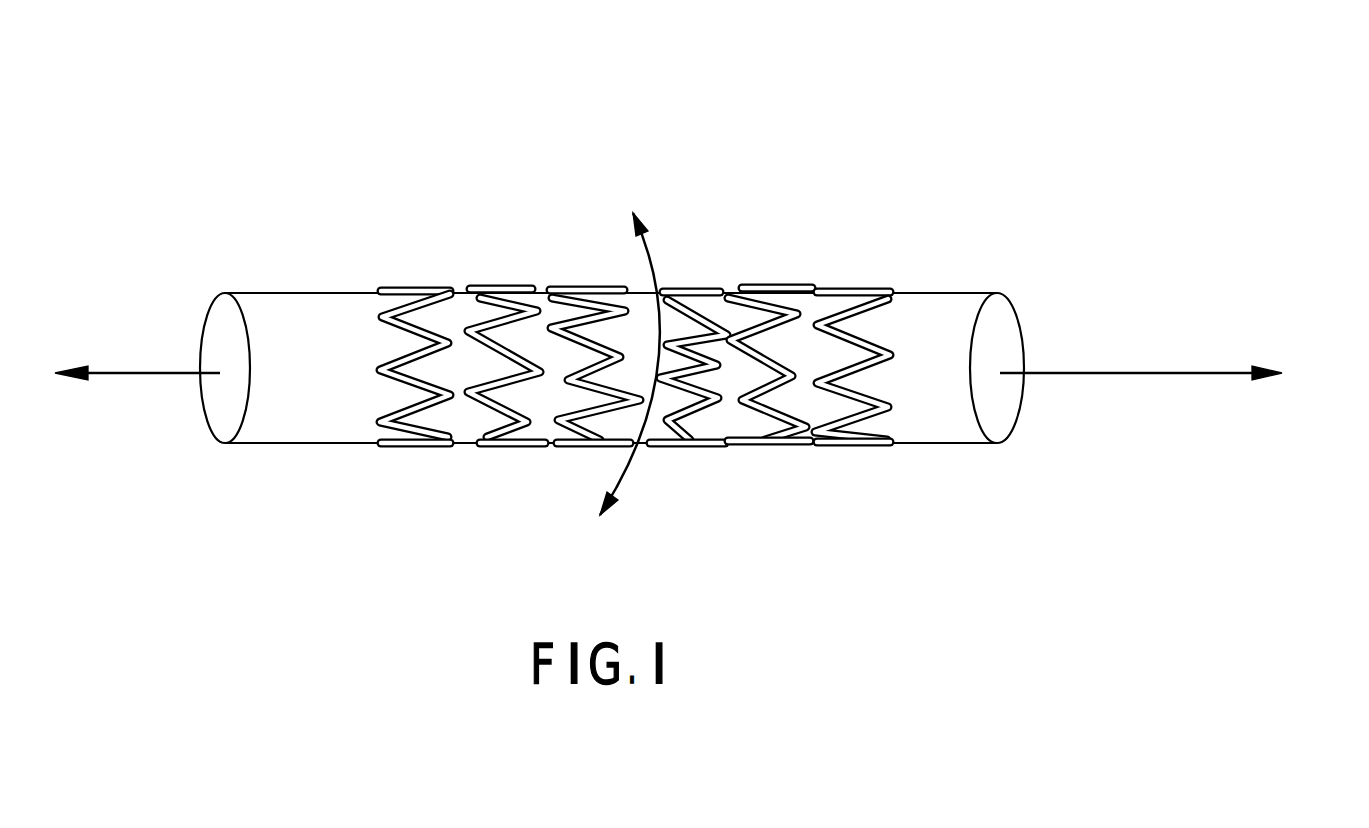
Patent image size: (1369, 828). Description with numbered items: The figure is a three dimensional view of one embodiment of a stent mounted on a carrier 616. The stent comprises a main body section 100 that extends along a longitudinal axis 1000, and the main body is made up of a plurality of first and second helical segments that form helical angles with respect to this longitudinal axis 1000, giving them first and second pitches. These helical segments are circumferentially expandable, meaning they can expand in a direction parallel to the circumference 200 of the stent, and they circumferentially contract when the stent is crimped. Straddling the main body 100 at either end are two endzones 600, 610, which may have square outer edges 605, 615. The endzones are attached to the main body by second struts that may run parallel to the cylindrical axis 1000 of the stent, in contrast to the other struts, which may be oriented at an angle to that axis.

The main body section 100 is at (597, 248).
The circumference 200 is at (606, 386).
The endzone 600 is at (865, 331).
The square outer edge 605 is at (620, 369).
The endzone 610 is at (414, 290).
The square outer edge 615 is at (364, 326).
The carrier 616 is at (928, 427).
The longitudinal axis 1000 is at (1180, 374).